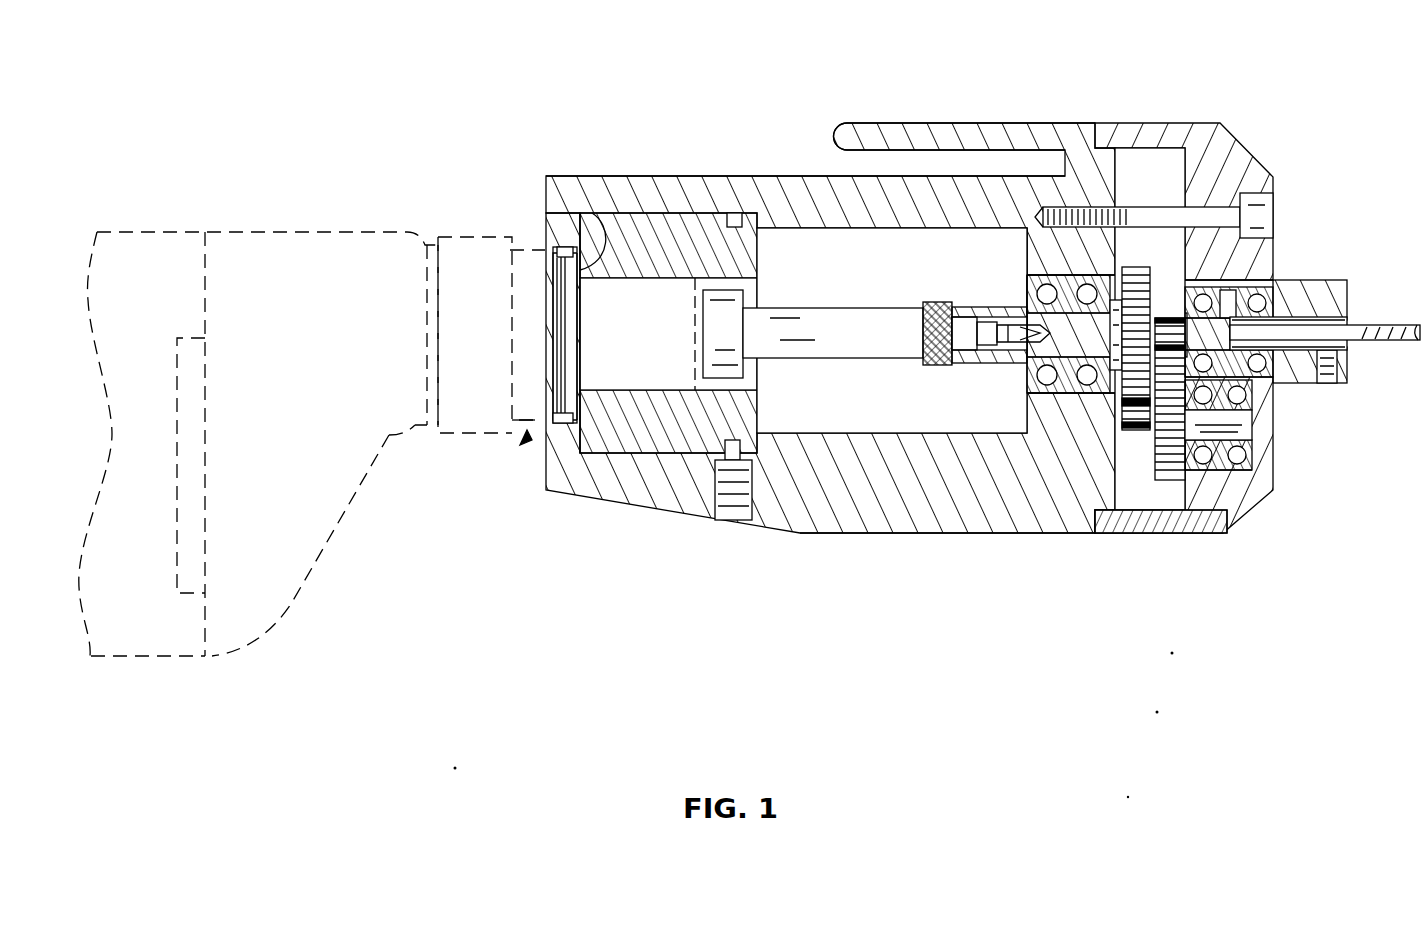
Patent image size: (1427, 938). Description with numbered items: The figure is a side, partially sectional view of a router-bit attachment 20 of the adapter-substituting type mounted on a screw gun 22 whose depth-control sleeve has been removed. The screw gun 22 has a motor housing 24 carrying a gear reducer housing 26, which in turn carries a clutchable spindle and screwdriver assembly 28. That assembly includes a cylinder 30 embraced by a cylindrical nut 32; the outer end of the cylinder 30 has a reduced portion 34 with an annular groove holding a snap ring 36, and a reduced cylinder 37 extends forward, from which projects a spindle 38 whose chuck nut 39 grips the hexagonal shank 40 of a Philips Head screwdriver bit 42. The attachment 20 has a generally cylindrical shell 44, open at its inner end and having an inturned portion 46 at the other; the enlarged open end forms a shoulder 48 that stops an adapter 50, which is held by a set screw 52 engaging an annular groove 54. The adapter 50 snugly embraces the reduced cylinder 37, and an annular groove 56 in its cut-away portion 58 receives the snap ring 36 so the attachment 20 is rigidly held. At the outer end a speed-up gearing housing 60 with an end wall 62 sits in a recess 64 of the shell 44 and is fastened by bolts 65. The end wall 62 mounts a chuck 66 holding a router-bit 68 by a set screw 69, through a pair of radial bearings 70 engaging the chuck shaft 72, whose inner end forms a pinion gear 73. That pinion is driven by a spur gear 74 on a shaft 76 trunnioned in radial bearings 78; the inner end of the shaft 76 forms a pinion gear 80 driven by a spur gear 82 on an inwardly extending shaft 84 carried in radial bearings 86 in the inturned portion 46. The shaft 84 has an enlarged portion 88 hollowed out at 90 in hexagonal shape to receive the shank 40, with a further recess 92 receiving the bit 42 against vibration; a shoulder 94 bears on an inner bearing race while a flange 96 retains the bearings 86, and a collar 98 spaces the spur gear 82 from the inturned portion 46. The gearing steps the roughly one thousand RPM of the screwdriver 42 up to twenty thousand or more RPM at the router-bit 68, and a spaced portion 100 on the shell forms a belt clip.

The router-bit attachment 20 is at (852, 536).
The screw gun 22 is at (187, 672).
The motor housing 24 is at (130, 660).
The gear reducer housing 26 is at (310, 590).
The clutchable spindle and screwdriver assembly 28 is at (524, 438).
The cylinder 30 is at (457, 250).
The cylindrical nut 32 is at (442, 240).
The reduced portion 34 is at (580, 430).
The snap ring 36 is at (583, 320).
The reduced cylinder 37 is at (657, 368).
The spindle 38 is at (815, 335).
The chuck nut 39 is at (932, 360).
The hexagonal shank 40 is at (963, 348).
The Philips Head screwdriver bit 42 is at (985, 348).
The cylindrical shell 44 is at (812, 195).
The inturned portion 46 is at (1035, 260).
The shoulder 48 is at (762, 228).
The adapter 50 is at (545, 233).
The set screw 52 is at (735, 512).
The annular groove 54 is at (735, 213).
The annular groove 56 is at (527, 265).
The cut-away portion 58 is at (590, 222).
The speed-up gearing housing 60 is at (1200, 140).
The end wall 62 is at (1255, 255).
The recess 64 is at (1093, 533).
The bolts 65 is at (1262, 213).
The chuck 66 is at (1345, 290).
The router-bit 68 is at (1395, 342).
The set screw 69 is at (1338, 385).
The radial bearings 70 is at (1265, 278).
The shaft 72 is at (1262, 370).
The pinion gear 73 is at (1170, 320).
The spur gear 74 is at (1173, 525).
The shaft 76 is at (1245, 430).
The radial bearings 78 is at (1215, 465).
The pinion gear 80 is at (1135, 415).
The spur gear 82 is at (1135, 282).
The shaft 84 is at (1055, 275).
The radial bearings 86 is at (1060, 395).
The enlarged portion 88 is at (985, 318).
The hexagonal hollow 90 is at (960, 310).
The recess 92 is at (1030, 335).
The shoulder 94 is at (1020, 300).
The flange 96 is at (1100, 215).
The collar 98 is at (1090, 395).
The spaced portion 100 is at (905, 135).